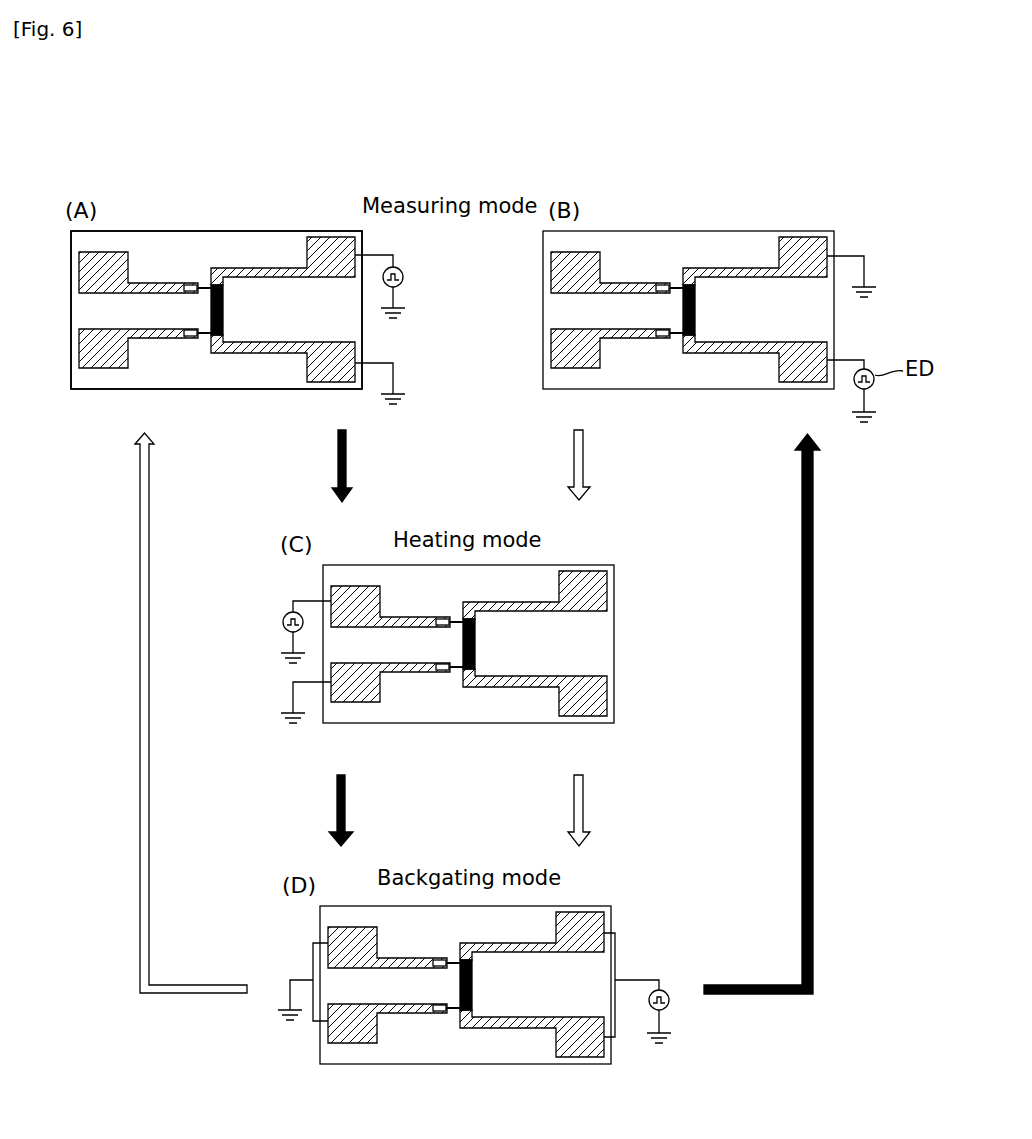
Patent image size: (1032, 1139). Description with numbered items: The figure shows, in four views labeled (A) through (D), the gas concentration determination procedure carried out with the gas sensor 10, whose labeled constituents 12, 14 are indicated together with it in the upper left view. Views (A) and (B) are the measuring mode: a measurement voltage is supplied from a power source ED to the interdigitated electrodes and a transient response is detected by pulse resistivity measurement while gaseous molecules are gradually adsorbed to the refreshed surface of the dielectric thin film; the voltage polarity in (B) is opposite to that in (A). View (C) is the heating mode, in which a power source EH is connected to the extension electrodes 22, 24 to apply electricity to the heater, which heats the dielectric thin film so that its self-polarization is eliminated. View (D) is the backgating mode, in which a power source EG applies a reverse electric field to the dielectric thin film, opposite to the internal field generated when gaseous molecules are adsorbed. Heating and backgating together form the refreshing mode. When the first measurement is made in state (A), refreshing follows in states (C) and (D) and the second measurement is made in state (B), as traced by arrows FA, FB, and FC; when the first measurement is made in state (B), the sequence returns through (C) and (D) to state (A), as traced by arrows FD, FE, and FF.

The sensor element 10 is at (203, 389).
The substrate 12 is at (216, 334).
The insulating layer 14 is at (216, 334).
The extension electrode 22 is at (79, 347).
The extension electrode 24 is at (79, 270).
The detection power source ED is at (404, 272).
The power source EH is at (283, 621).
The backgate power source EG is at (668, 1007).
The arrow FA is at (337, 463).
The arrow FB is at (337, 800).
The arrow FC is at (813, 626).
The arrow FD is at (583, 460).
The arrow FE is at (583, 795).
The arrow FF is at (140, 656).